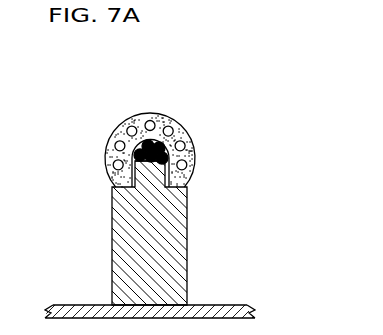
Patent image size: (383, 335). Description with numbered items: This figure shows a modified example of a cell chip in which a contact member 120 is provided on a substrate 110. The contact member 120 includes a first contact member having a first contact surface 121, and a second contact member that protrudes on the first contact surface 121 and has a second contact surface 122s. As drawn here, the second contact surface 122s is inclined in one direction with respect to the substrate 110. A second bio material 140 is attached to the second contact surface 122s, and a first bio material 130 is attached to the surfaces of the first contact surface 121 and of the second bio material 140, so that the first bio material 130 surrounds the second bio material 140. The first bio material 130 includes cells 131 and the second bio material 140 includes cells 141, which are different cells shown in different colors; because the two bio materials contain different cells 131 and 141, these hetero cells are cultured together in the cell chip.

The substrate 110 is at (77, 305).
The contact member 120 is at (200, 255).
The first contact surface 121 is at (190, 189).
The second contact surface 122s is at (134, 162).
The first bio material 130 is at (111, 135).
The cells 131 is at (151, 120).
The second bio material 140 is at (170, 151).
The cells 141 is at (170, 141).